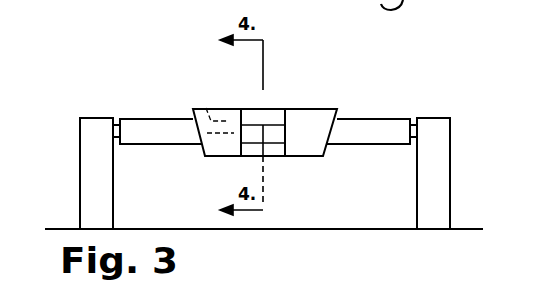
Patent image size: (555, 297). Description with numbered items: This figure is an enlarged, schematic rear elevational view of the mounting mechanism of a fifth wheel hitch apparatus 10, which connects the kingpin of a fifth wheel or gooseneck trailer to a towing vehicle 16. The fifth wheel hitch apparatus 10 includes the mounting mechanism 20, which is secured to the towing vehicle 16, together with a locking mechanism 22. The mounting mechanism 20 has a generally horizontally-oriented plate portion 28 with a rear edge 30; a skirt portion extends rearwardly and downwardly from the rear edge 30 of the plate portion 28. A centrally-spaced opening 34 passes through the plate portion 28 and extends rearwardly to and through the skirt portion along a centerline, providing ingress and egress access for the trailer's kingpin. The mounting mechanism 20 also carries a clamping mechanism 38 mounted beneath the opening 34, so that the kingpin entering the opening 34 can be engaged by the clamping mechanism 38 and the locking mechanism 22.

The fifth wheel hitch apparatus 10 is at (154, 43).
The towing vehicle 16 is at (468, 227).
The mounting mechanism 20 is at (156, 94).
The locking mechanism 22 is at (205, 105).
The plate portion 28 is at (268, 110).
The rear edge 30 is at (327, 107).
The centrally-spaced opening 34 is at (280, 156).
The clamping mechanism 38 is at (252, 125).